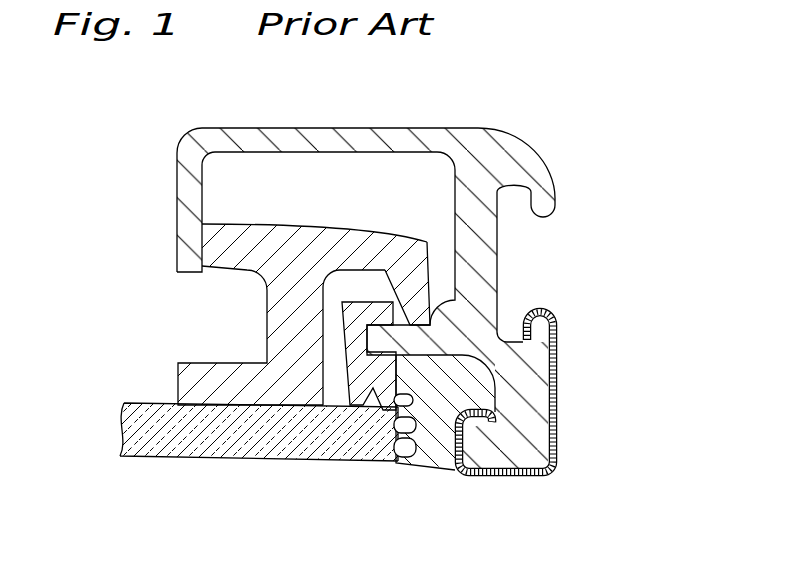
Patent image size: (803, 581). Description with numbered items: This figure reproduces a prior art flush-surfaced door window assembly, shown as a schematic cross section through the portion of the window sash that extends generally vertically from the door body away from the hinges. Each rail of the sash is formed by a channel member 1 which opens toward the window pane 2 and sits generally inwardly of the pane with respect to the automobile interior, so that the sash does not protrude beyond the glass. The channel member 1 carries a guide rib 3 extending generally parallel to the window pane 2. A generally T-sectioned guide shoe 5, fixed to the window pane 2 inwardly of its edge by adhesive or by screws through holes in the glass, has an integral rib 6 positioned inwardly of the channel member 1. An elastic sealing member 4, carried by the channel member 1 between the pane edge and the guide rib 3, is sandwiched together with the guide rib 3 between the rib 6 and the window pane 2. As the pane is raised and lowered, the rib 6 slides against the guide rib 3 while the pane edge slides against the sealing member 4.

The channel member 1 is at (497, 155).
The window pane 2 is at (238, 447).
The guide rib 3 is at (393, 338).
The elastic sealing member 4 is at (437, 457).
The guide shoe 5 is at (280, 320).
The rib 6 is at (415, 263).